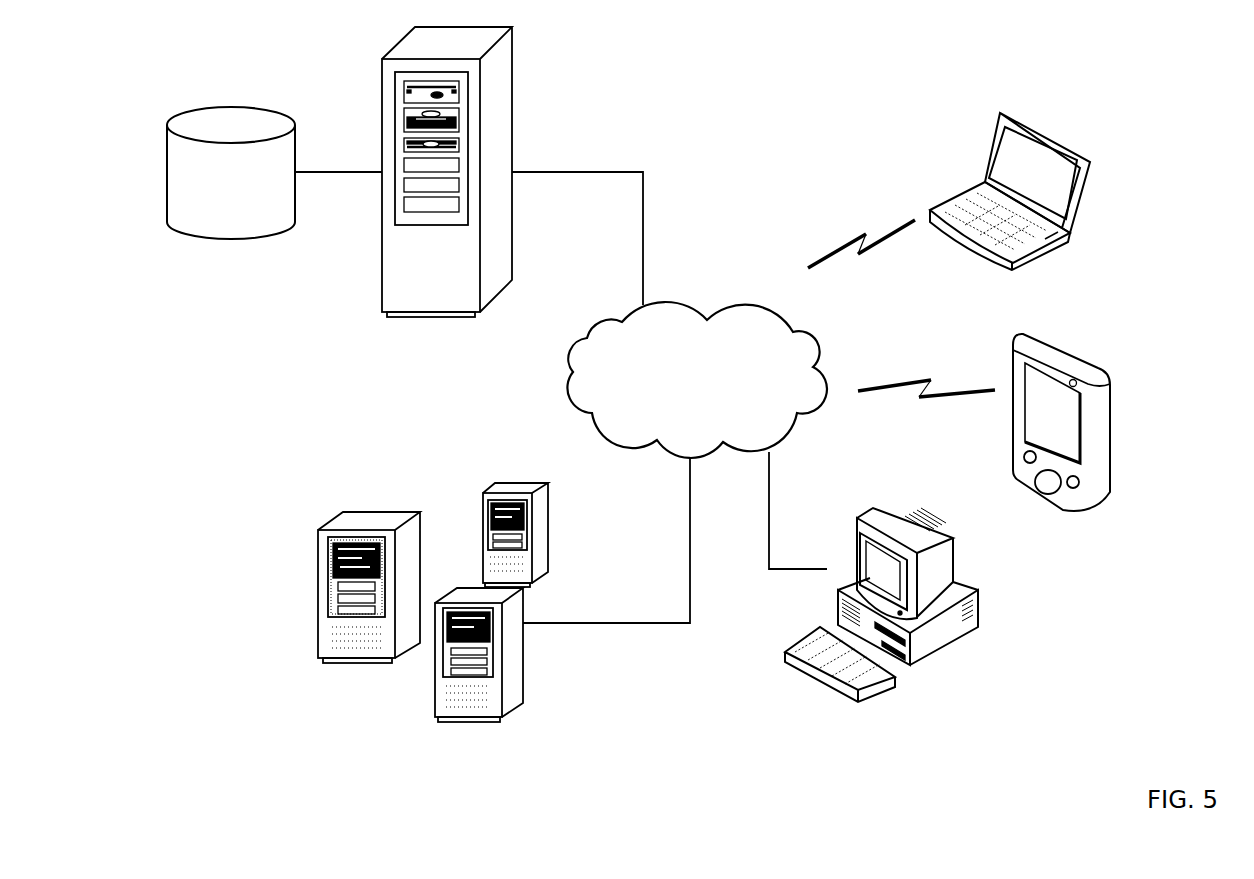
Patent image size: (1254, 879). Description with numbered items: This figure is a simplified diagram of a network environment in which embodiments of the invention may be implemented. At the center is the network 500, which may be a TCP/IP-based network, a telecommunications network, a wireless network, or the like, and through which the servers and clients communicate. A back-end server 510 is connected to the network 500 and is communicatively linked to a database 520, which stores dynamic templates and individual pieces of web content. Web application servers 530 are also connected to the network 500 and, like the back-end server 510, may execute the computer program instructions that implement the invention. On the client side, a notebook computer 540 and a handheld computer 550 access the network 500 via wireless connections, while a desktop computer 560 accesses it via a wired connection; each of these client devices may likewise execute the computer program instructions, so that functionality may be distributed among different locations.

The network 500 is at (713, 303).
The server 510 is at (440, 27).
The database 520 is at (232, 107).
The web application servers 530 is at (360, 511).
The notebook computer 540 is at (1018, 107).
The handheld computer 550 is at (1035, 333).
The desktop computer 560 is at (908, 512).